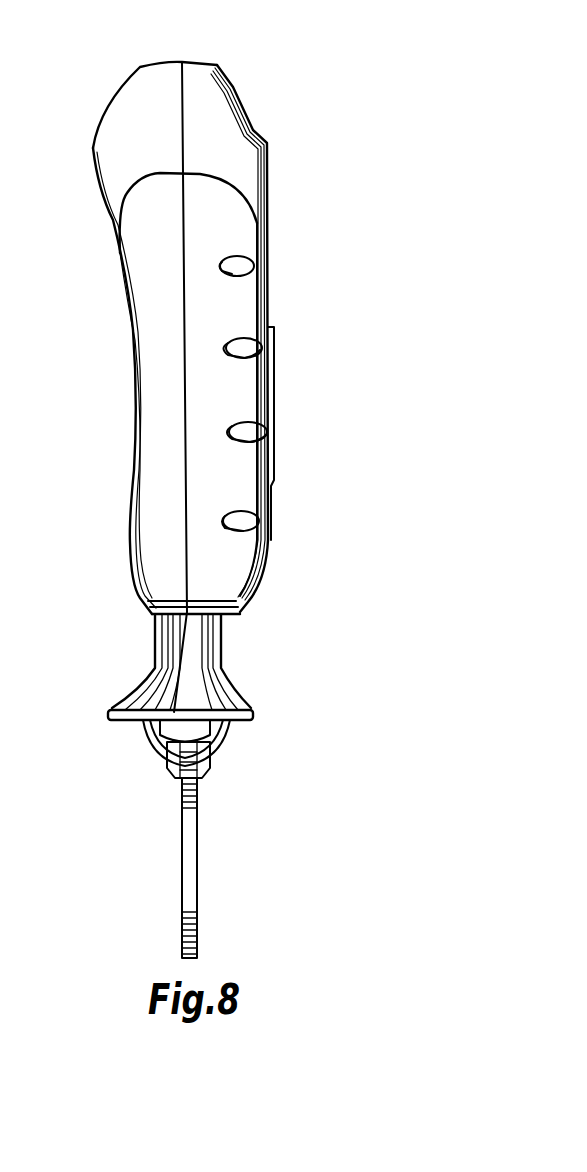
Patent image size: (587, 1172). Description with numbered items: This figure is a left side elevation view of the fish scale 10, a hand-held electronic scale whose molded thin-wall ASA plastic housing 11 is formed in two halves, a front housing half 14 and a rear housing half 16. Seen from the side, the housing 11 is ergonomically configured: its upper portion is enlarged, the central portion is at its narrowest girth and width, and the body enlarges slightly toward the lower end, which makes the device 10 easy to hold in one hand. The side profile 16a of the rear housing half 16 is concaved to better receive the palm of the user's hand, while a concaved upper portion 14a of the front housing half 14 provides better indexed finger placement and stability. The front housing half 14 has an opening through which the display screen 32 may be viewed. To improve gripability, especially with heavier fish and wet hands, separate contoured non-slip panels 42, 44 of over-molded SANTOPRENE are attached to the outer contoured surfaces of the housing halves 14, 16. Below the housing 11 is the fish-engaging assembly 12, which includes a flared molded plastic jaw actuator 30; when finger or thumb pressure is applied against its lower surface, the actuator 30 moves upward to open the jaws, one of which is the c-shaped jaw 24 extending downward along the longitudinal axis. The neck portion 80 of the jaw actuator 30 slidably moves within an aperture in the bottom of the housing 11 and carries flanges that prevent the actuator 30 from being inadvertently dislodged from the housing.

The fish scale 10 is at (337, 203).
The housing 11 is at (270, 170).
The fish-engaging assembly 12 is at (241, 691).
The front housing half 14 is at (212, 147).
The concaved upper portion 14a is at (233, 90).
The rear housing half 16 is at (147, 123).
The side profile 16a is at (130, 430).
The jaw 24 is at (197, 875).
The jaw actuator 30 is at (130, 684).
The display screen 32 is at (273, 395).
The contoured panel 42 is at (227, 312).
The contoured panel 44 is at (152, 333).
The neck portion 80 is at (220, 641).